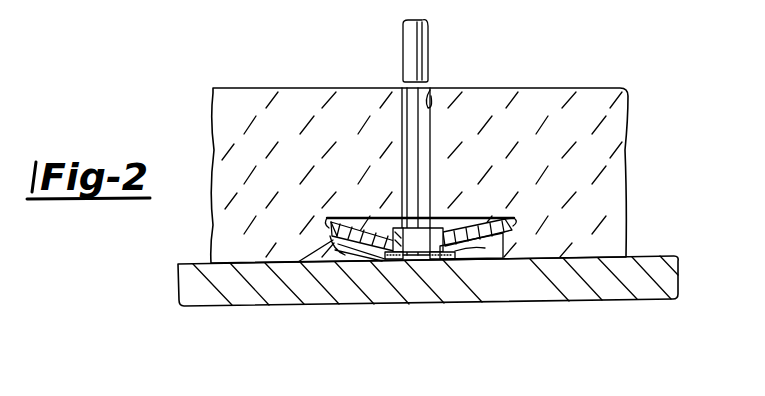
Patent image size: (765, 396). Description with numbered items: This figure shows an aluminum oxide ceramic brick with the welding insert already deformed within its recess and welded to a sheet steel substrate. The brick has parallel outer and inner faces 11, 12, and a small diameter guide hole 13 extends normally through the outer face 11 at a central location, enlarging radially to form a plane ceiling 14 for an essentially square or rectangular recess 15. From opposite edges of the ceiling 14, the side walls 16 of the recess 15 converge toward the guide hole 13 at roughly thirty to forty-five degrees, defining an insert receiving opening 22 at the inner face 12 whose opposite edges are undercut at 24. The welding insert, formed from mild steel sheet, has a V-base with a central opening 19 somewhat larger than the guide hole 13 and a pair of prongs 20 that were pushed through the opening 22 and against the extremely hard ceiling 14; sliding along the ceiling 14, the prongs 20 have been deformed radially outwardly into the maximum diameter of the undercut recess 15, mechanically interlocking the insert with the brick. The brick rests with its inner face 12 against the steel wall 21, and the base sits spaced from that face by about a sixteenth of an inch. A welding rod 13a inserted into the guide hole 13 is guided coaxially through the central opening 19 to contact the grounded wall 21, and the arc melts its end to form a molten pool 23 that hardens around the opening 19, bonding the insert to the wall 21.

The outer face 11 is at (295, 88).
The inner face 12 is at (272, 261).
The guide hole 13 is at (428, 88).
The welding rod 13a is at (430, 28).
The ceiling 14 is at (465, 218).
The recess 15 is at (497, 250).
The side walls 16 is at (332, 238).
The central opening 19 is at (428, 254).
The prongs 20 is at (548, 192).
The steel wall 21 is at (325, 261).
The insert receiving opening 22 is at (385, 259).
The molten pool 23 is at (475, 252).
The undercut 24 is at (330, 222).